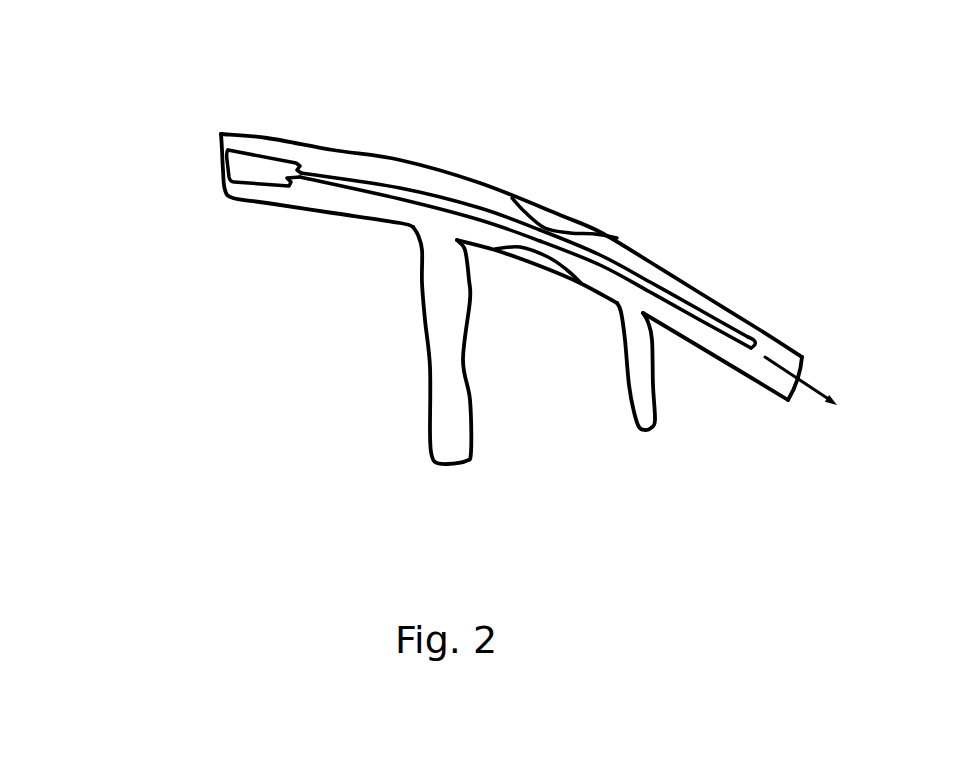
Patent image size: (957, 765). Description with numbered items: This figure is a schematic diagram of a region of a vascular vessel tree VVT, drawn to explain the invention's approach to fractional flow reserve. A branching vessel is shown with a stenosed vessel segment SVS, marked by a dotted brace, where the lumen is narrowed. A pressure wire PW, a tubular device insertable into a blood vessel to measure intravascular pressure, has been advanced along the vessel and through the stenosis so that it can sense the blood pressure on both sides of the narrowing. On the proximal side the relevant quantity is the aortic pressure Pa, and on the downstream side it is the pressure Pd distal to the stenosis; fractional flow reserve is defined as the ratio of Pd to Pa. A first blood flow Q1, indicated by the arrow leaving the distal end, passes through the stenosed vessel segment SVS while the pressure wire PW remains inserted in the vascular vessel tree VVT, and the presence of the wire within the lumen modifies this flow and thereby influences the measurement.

The vascular vessel tree VVT is at (656, 112).
The pressure wire PW is at (258, 167).
The aortic pressure Pa is at (388, 165).
The pressure distal to the stenosis Pd is at (683, 283).
The stenosed vessel segment SVS is at (673, 246).
The first blood flow Q1 is at (812, 376).